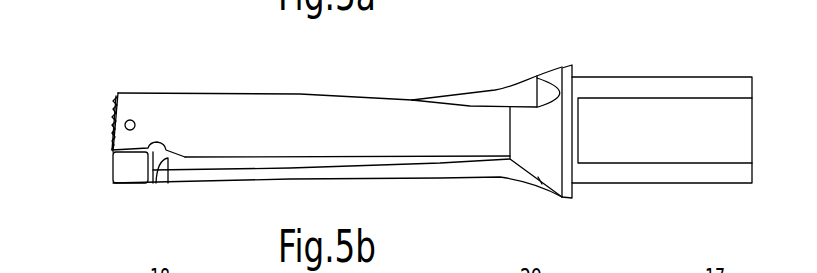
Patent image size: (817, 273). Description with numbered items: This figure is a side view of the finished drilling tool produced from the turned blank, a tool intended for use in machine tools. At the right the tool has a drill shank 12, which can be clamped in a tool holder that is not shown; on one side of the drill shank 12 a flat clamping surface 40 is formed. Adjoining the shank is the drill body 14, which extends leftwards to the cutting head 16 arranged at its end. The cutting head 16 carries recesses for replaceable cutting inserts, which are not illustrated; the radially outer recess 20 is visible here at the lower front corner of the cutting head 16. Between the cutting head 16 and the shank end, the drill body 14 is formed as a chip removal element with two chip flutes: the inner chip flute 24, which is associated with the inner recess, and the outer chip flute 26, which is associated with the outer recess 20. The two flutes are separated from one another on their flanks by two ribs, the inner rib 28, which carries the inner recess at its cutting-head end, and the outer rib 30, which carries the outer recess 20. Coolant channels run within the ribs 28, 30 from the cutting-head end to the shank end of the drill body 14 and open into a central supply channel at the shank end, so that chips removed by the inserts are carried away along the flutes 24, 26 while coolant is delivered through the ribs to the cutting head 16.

The drill shank 12 is at (651, 76).
The drill body 14 is at (418, 80).
The cutting head 16 is at (123, 80).
The radially outer recess 20 is at (133, 170).
The inner chip flute 24 is at (463, 102).
The outer chip flute 26 is at (408, 175).
The inner rib 28 is at (268, 120).
The outer rib 30 is at (500, 90).
The clamping surface 40 is at (697, 117).